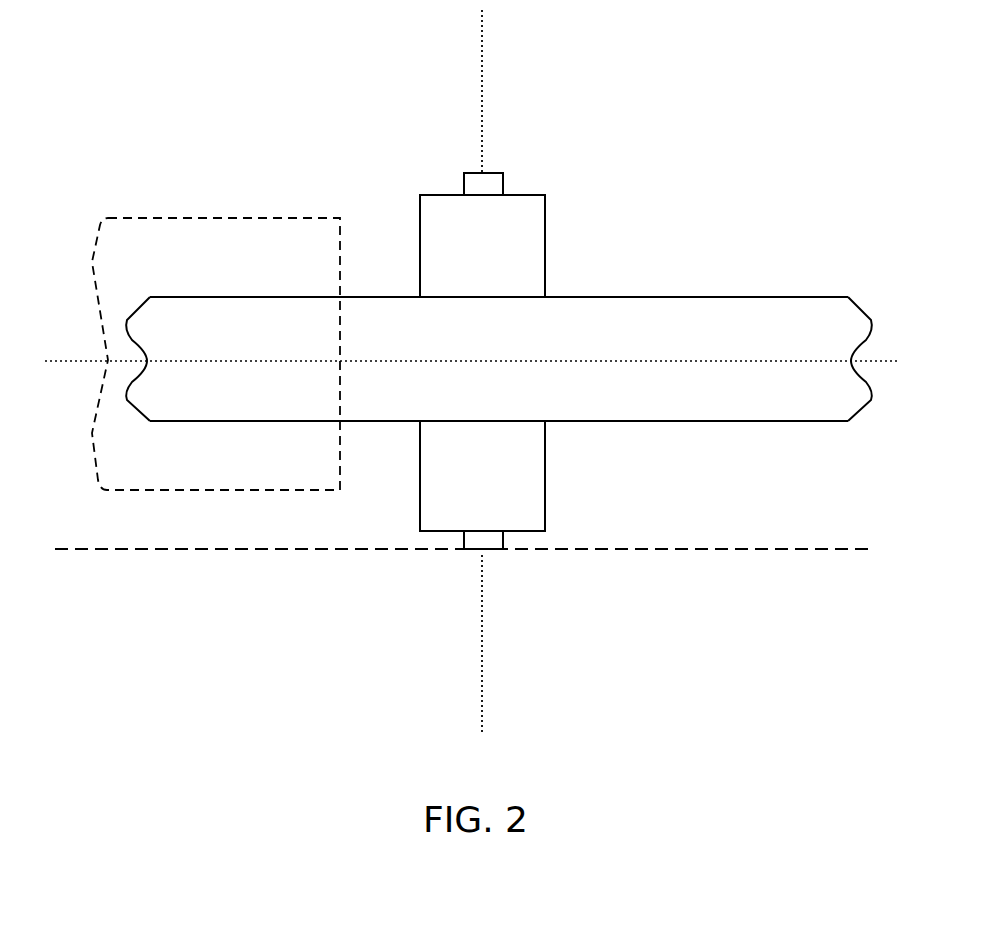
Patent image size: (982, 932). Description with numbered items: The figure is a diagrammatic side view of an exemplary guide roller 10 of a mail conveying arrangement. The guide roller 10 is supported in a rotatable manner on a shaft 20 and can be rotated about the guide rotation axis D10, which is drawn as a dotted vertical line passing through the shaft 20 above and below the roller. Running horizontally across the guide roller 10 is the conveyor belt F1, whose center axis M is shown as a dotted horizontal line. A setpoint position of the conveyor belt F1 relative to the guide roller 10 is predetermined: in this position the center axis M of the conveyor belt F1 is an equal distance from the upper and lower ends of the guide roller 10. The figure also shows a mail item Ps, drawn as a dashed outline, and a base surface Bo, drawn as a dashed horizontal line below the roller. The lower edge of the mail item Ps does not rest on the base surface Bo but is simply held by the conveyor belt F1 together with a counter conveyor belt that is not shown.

The guide rotation axis D10 is at (478, 80).
The shaft 20 is at (498, 168).
The guide roller 10 is at (550, 242).
The center axis M is at (718, 355).
The conveyor belt F1 is at (745, 422).
The mail item Ps is at (180, 215).
The base surface Bo is at (172, 550).